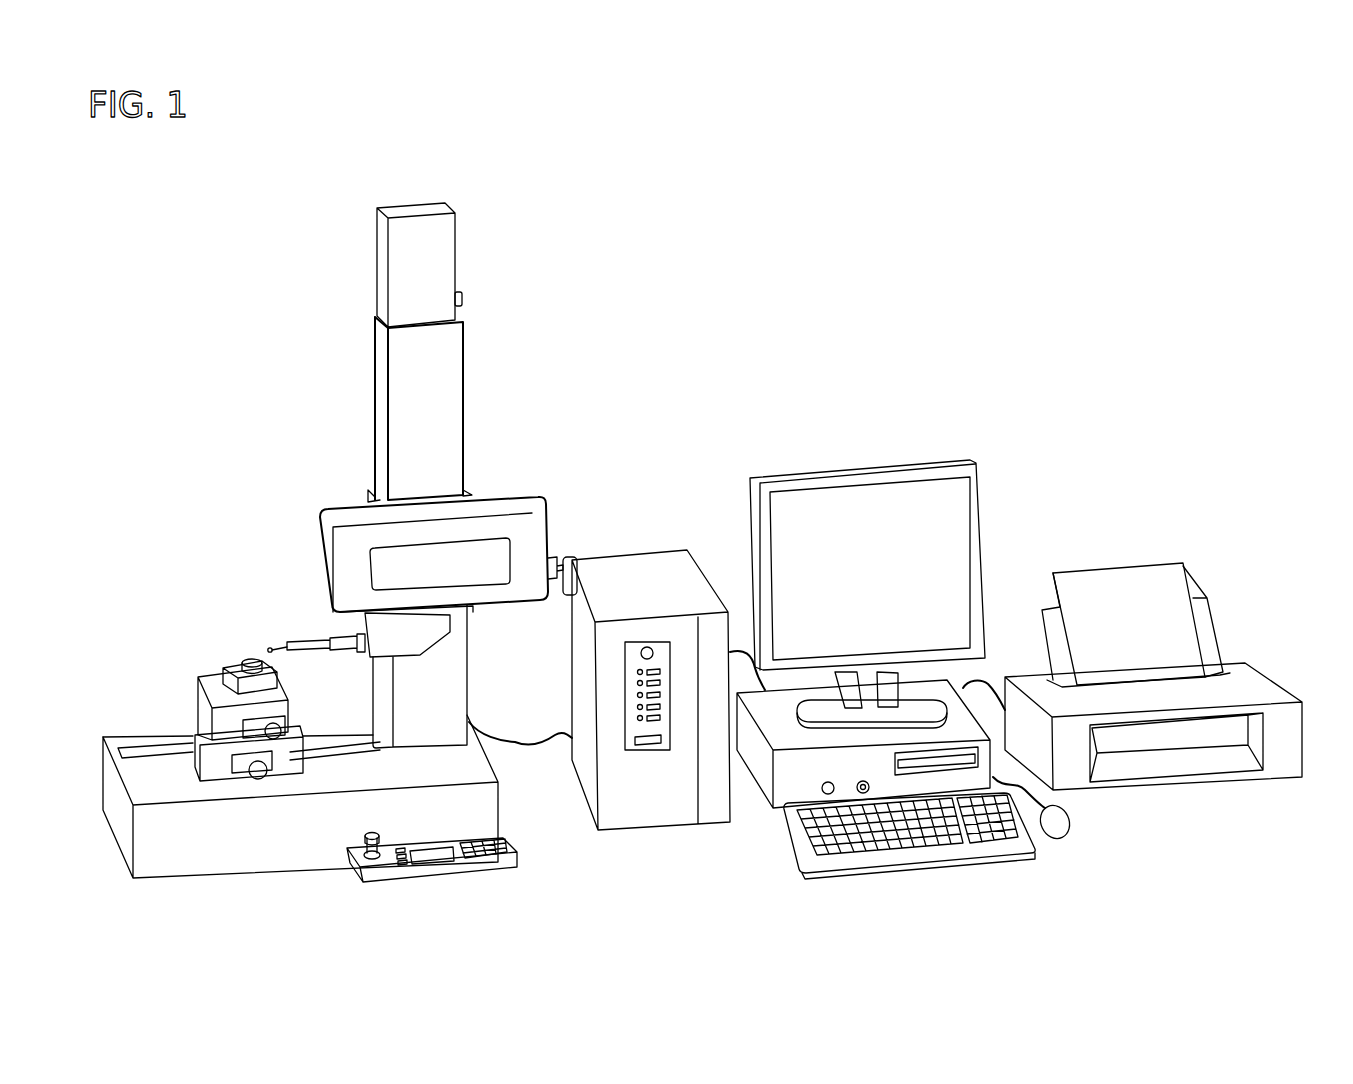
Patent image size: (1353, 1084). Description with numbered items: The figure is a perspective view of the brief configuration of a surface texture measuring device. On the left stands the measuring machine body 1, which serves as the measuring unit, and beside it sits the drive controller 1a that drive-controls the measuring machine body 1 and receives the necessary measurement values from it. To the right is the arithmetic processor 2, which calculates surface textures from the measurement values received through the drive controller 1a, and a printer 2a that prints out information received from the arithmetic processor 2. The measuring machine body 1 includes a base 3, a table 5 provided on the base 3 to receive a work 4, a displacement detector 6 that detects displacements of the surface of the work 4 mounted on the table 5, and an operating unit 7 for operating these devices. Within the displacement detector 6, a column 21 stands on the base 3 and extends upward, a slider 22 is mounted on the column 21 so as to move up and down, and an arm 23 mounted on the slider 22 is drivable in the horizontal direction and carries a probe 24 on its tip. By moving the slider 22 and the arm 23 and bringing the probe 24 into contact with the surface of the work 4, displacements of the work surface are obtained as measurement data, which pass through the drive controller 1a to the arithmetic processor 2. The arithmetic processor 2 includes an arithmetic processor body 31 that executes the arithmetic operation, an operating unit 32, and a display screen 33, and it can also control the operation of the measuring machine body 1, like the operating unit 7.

The measuring machine body 1 is at (348, 176).
The drive controller 1a is at (646, 517).
The arithmetic processor 2 is at (827, 400).
The printer 2a is at (1108, 545).
The base 3 is at (180, 865).
The work 4 is at (252, 658).
The table 5 is at (194, 670).
The displacement detector 6 is at (355, 463).
The operating unit 7 is at (458, 872).
The column 21 is at (453, 263).
The slider 22 is at (521, 500).
The arm 23 is at (348, 648).
The probe 24 is at (270, 646).
The arithmetic processor body 31 is at (773, 810).
The operating unit 32 is at (1060, 838).
The display screen 33 is at (892, 478).